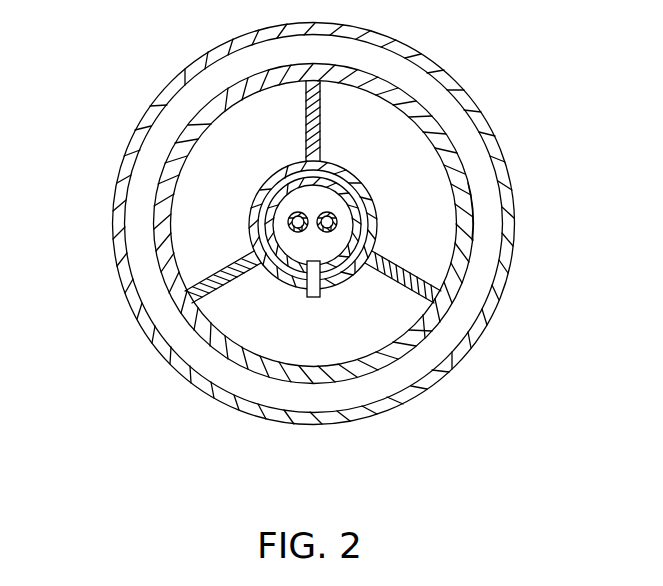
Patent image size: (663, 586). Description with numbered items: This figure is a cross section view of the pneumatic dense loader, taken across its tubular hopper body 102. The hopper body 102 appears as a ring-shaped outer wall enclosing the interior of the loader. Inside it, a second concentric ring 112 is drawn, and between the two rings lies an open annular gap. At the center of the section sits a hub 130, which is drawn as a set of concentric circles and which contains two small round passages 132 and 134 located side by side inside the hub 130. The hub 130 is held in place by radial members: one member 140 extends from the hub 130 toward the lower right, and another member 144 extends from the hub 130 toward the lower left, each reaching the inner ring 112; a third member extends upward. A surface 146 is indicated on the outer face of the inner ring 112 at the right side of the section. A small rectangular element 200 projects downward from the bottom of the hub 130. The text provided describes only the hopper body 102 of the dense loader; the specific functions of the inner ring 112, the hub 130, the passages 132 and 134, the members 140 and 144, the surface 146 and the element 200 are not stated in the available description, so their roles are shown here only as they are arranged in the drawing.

The tubular hopper body 102 is at (437, 62).
The inner housing ring 112 is at (455, 127).
The central hub 130 is at (255, 226).
The first lumen 132 is at (287, 212).
The second lumen 134 is at (340, 212).
The spoke 140 is at (345, 281).
The spoke 144 is at (213, 277).
The ring surface 146 is at (472, 252).
The connector 200 is at (316, 297).